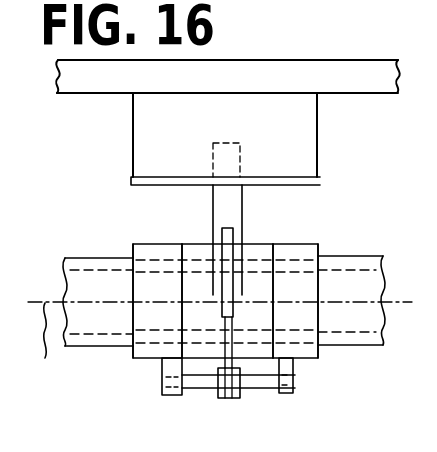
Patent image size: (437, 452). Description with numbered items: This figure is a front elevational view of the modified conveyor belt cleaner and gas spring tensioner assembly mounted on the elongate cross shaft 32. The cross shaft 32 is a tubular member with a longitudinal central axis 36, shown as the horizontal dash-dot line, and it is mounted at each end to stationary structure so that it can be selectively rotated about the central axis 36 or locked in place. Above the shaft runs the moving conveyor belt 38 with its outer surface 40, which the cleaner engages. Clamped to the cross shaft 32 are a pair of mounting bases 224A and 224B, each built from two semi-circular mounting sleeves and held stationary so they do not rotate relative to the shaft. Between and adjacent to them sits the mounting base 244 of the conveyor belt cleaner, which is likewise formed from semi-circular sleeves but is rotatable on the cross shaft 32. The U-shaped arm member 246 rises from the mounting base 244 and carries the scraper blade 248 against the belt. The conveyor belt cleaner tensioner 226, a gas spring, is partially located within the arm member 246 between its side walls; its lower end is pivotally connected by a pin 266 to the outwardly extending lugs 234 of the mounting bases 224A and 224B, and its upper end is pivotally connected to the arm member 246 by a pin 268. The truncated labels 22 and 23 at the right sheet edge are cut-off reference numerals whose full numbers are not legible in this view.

The conveyor belt 38 is at (353, 70).
The outer surface 40 is at (365, 94).
The scraper blade 248 is at (148, 127).
The arm member 246 is at (246, 190).
The pin 268 is at (221, 239).
The cross shaft 32 is at (78, 258).
The longitudinal central axis 36 is at (220, 343).
The mounting base 244 is at (266, 237).
The mounting base 224A is at (130, 363).
The mounting base 224B is at (315, 362).
The conveyor belt cleaner tensioner 226 is at (248, 315).
The pin 266 is at (246, 378).
The lug 234 is at (170, 396).
The assembly 22 is at (404, 187).
The partial numeral 23 is at (425, 295).